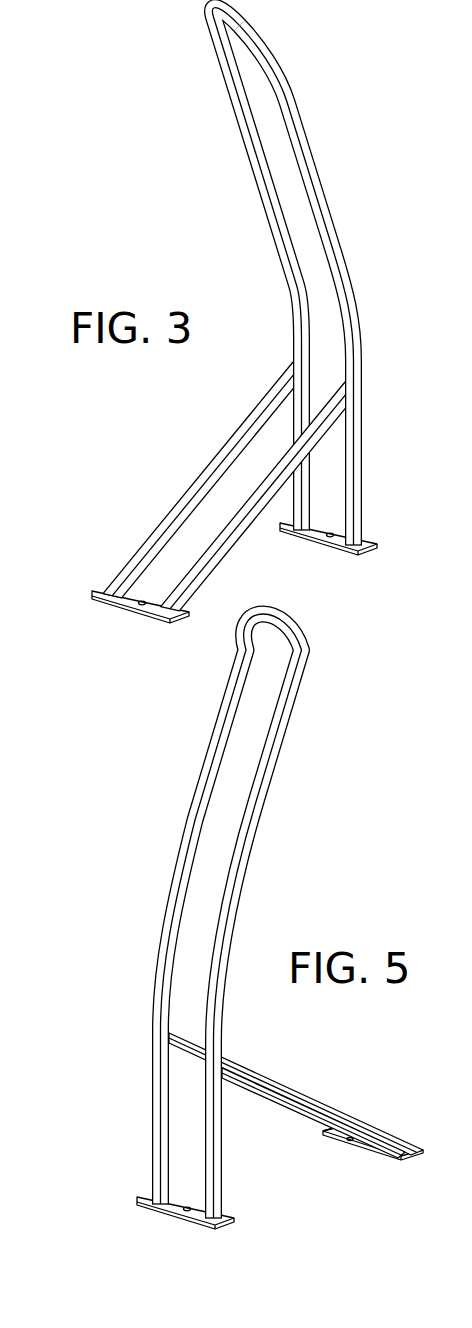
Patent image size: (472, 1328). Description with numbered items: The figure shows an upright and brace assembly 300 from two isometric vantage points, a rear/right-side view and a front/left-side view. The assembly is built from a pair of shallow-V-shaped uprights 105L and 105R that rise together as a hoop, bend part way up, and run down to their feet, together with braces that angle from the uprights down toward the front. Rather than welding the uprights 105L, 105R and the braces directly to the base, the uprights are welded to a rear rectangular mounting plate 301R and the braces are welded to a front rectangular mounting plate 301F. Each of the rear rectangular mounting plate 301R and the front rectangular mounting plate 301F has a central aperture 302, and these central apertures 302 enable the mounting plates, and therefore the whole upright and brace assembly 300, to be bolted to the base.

In FIG. 3, the upright and brace assembly 300 is at (316, 38).
In FIG. 5, the upright and brace assembly 300 is at (168, 725).
In FIG. 3, the shallow-V-shaped upright 105L is at (250, 160).
In FIG. 5, the shallow-V-shaped upright 105L is at (255, 845).
In FIG. 3, the shallow-V-shaped upright 105R is at (307, 160).
In FIG. 5, the shallow-V-shaped upright 105R is at (181, 845).
In FIG. 3, the front rectangular mounting plate 301F is at (122, 606).
In FIG. 5, the front rectangular mounting plate 301F is at (348, 1142).
In FIG. 3, the rear rectangular mounting plate 301R is at (316, 536).
In FIG. 5, the rear rectangular mounting plate 301R is at (165, 1208).
In FIG. 3, the central aperture 302 is at (146, 614).
In FIG. 5, the central aperture 302 is at (195, 1190).